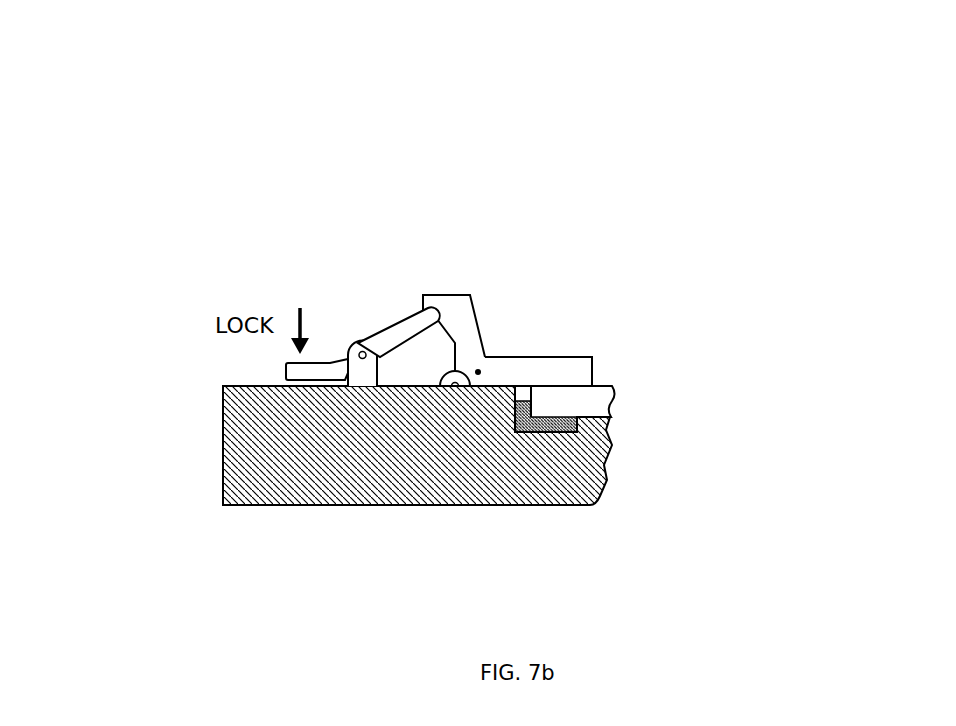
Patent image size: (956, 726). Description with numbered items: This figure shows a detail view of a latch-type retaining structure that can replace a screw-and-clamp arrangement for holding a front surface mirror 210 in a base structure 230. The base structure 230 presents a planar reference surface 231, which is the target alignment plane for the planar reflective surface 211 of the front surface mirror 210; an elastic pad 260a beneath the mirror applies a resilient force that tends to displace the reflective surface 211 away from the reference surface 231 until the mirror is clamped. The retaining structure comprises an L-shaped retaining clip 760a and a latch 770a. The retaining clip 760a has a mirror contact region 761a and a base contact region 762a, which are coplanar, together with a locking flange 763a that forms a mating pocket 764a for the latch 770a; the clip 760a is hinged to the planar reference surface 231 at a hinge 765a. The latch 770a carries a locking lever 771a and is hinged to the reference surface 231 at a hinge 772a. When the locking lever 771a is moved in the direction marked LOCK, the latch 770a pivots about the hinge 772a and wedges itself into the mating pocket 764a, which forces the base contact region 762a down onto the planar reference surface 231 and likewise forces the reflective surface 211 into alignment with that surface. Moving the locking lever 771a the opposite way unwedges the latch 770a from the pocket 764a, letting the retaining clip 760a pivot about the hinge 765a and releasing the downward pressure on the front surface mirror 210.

The hinge 765a is at (445, 368).
The locking flange 763a is at (433, 312).
The latch 770a is at (393, 347).
The mating pocket 764a is at (443, 305).
The retaining clip 760a is at (481, 369).
The hinge 772a is at (353, 345).
The base contact region 762a is at (503, 382).
The mirror contact region 761a is at (580, 382).
The planar reference surface 231 is at (240, 383).
The planar reflective surface 211 is at (598, 383).
The locking lever 771a is at (295, 385).
The front surface mirror 210 is at (615, 401).
The elastic pad 260a is at (562, 433).
The base structure 230 is at (590, 507).